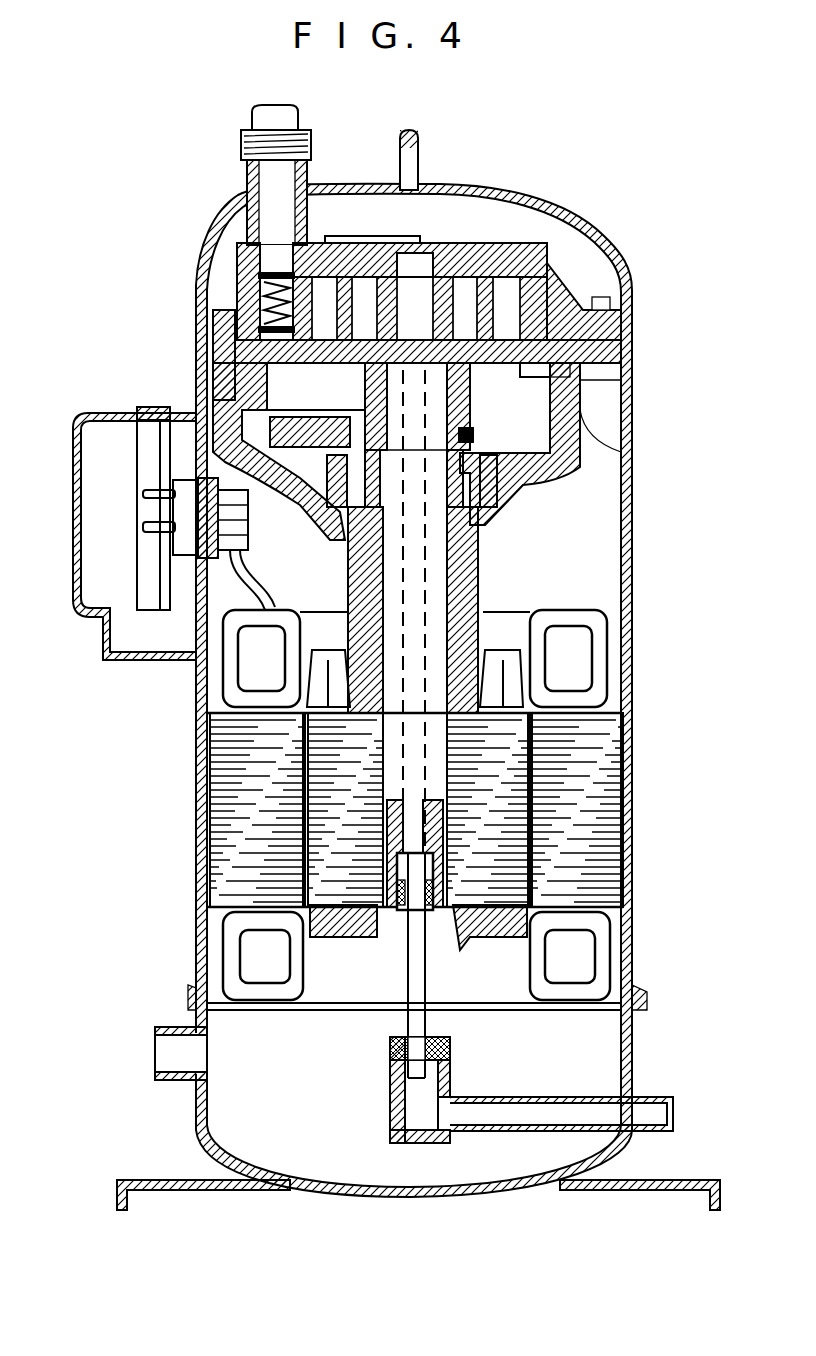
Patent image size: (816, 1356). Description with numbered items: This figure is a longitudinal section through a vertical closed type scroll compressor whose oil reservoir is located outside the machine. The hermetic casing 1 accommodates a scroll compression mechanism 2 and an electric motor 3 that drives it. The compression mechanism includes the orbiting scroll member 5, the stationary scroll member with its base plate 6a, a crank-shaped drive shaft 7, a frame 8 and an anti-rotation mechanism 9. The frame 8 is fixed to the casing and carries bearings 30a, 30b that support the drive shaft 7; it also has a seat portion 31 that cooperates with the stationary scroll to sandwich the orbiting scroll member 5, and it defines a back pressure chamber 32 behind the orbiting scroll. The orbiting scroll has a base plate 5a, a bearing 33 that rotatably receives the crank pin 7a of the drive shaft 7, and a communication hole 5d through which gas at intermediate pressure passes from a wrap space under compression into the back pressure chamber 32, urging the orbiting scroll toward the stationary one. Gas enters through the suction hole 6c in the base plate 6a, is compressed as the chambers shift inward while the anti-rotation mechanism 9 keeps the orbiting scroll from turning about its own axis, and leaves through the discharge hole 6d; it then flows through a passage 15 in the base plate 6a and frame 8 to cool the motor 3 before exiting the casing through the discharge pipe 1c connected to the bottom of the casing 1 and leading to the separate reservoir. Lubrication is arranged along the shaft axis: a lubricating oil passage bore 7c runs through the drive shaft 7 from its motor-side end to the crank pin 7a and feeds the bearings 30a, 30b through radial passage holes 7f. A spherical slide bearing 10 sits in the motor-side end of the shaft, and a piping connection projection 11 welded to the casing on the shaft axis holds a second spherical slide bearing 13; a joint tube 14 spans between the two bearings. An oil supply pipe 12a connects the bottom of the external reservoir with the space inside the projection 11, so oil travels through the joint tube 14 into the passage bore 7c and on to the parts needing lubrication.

The hermetic casing 1 is at (632, 556).
The discharge pipe 1c is at (158, 1027).
The scroll compression mechanism 2 is at (333, 258).
The electric motor 3 is at (615, 773).
The orbiting scroll member 5 is at (628, 337).
The base plate of orbiting scroll member 5a is at (215, 365).
The communication hole 5d is at (600, 368).
The base plate of stationary scroll member 6a is at (455, 262).
The suction hole 6c is at (240, 300).
The discharge hole 6d is at (420, 240).
The drive shaft 7 is at (440, 603).
The crank pin 7a is at (527, 473).
The lubricating oil passage bore 7c is at (407, 600).
The radial passage holes 7f is at (380, 702).
The frame 8 is at (612, 455).
The anti-rotation mechanism 9 is at (227, 423).
The spherical slide bearing 10 is at (397, 937).
The piping connection projection 11 is at (450, 1063).
The oil supply pipe 12a is at (663, 1097).
The spherical slide bearing 13 is at (443, 1033).
The joint tube 14 is at (430, 963).
The passage 15 is at (217, 387).
The bearing 30a is at (445, 625).
The bearing 30b is at (485, 660).
The seat portion 31 is at (625, 400).
The back pressure chamber 32 is at (330, 405).
The bearing 33 is at (474, 430).